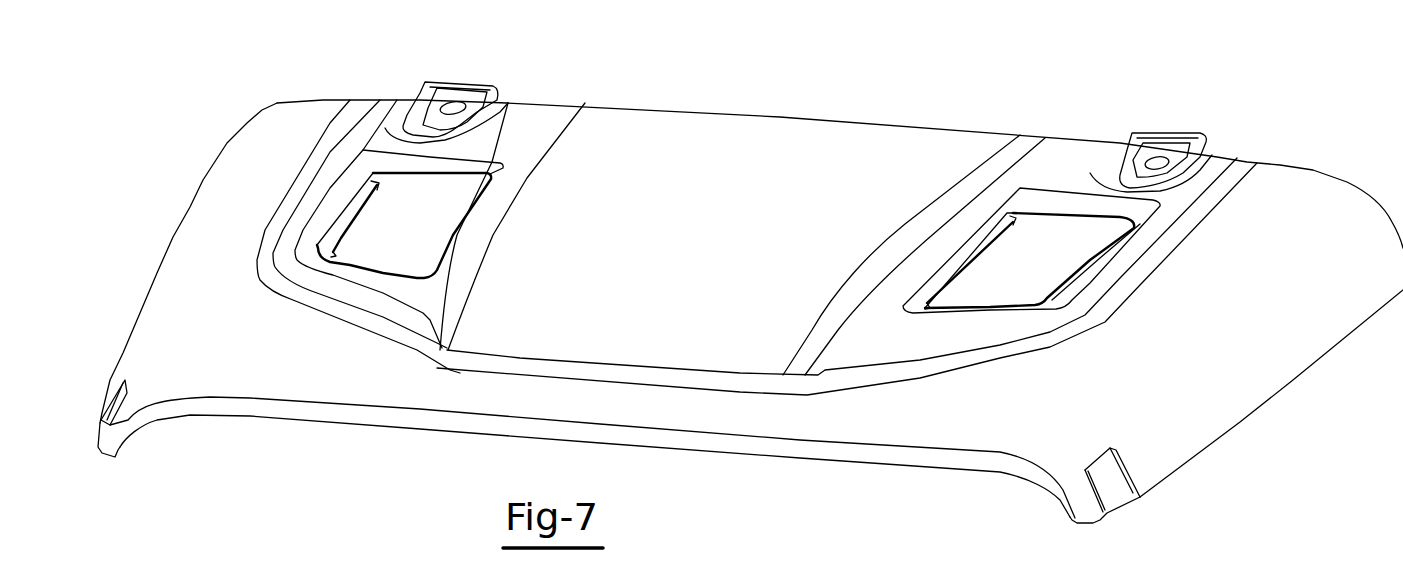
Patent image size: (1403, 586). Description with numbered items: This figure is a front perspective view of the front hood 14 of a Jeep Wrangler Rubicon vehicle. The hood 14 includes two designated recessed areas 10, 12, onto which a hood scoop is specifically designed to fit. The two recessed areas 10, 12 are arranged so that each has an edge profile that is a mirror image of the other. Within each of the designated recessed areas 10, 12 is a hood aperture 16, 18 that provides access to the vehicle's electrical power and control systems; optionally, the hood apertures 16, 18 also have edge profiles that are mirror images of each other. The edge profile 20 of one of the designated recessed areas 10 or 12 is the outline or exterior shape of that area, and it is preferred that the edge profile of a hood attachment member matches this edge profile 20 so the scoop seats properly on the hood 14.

The designated recessed area 10 is at (960, 267).
The designated recessed area 12 is at (470, 213).
The hood 14 is at (777, 122).
The hood aperture 16 is at (1057, 267).
The hood aperture 18 is at (436, 224).
The edge profile 20 is at (453, 175).